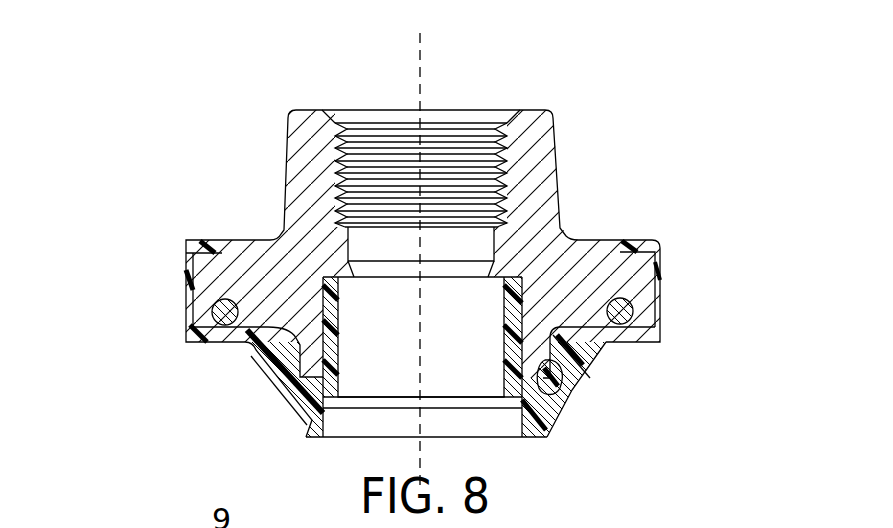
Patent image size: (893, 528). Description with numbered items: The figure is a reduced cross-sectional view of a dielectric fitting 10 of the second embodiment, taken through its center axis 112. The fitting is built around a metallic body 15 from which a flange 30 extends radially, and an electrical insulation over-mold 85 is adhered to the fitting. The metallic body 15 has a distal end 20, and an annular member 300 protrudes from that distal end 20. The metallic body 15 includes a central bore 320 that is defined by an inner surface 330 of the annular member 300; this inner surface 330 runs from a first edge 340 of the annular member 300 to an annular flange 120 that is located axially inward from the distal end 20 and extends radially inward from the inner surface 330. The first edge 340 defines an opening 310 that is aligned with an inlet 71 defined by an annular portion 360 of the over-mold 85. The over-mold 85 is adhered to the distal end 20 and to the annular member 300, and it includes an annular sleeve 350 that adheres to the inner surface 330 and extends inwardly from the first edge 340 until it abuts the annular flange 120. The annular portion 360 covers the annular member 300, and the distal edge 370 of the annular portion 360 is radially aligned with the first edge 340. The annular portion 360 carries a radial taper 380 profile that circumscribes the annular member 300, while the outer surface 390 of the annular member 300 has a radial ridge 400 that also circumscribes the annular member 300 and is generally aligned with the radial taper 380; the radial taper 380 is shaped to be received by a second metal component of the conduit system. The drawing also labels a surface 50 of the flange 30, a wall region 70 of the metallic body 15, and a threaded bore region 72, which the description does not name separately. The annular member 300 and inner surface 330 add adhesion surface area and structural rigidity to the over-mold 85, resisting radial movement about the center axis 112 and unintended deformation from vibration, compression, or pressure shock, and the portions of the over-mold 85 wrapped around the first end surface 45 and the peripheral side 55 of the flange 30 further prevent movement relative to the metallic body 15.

The dielectric fitting 10 is at (116, 99).
The metallic body 15 is at (315, 152).
The distal end 20 is at (254, 352).
The flange 30 is at (597, 280).
The first end surface 45 is at (252, 238).
The flange bottom surface 50 is at (187, 347).
The peripheral side 55 is at (191, 293).
The body wall 70 is at (540, 177).
The inlet 71 is at (360, 420).
The threaded bore 72 is at (368, 126).
The electrical insulation over-mold 85 is at (188, 256).
The center axis 112 is at (498, 2).
The annular flange 120 is at (490, 277).
The annular member 300 is at (255, 363).
The opening 310 is at (400, 363).
The central bore 320 is at (480, 315).
The inner surface 330 is at (578, 238).
The first edge 340 is at (548, 394).
The annular sleeve 350 is at (513, 360).
The annular portion 360 is at (290, 428).
The distal edge 370 is at (542, 438).
The radial taper 380 is at (268, 390).
The outer surface 390 is at (592, 346).
The radial ridge 400 is at (590, 362).